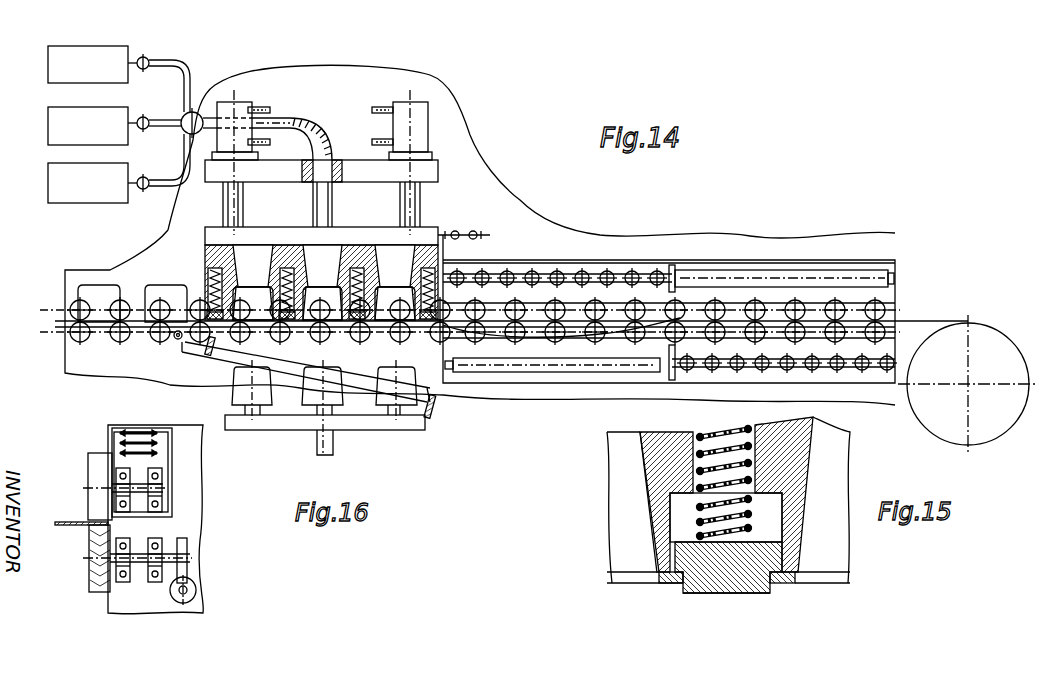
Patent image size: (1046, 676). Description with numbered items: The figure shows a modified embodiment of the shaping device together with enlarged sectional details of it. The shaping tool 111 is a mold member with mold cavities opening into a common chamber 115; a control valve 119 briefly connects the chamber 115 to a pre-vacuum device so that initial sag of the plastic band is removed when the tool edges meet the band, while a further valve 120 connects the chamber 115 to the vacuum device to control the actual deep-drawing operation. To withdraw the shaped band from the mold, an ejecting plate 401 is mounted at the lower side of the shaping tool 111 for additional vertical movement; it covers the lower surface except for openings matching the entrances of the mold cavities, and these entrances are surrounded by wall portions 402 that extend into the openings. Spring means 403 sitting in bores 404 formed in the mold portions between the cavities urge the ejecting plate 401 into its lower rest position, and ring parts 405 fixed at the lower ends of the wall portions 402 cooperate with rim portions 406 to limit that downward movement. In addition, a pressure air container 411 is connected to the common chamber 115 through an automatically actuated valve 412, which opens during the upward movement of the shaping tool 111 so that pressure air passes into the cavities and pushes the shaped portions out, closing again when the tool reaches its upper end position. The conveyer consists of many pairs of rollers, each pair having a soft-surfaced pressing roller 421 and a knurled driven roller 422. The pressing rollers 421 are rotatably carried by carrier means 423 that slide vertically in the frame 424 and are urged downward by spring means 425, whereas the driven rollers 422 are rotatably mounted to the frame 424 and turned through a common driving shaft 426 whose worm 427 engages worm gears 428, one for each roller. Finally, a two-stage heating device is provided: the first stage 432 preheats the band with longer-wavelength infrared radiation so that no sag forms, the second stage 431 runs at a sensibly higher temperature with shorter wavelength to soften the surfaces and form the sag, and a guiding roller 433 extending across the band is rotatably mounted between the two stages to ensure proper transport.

In FIG. 14, the shaping tool 111 is at (211, 263).
In FIG. 15, the shaping tool 111 is at (642, 479).
In FIG. 14, the chamber 115 is at (371, 234).
In FIG. 14, the control valve 119 is at (146, 61).
In FIG. 14, the valve 120 is at (146, 121).
In FIG. 14, the ejecting plate 401 is at (324, 303).
In FIG. 15, the ejecting plate 401 is at (725, 587).
In FIG. 15, the wall portions 402 is at (654, 540).
In FIG. 14, the spring means 403 is at (211, 300).
In FIG. 15, the spring means 403 is at (751, 446).
In FIG. 14, the bores 404 is at (211, 281).
In FIG. 15, the bores 404 is at (695, 434).
In FIG. 15, the ring parts 405 is at (668, 584).
In FIG. 15, the rim portions 406 is at (677, 548).
In FIG. 14, the pressure air container 411 is at (82, 208).
In FIG. 14, the automatically actuated valve 412 is at (146, 181).
In FIG. 14, the pressing roller 421 is at (128, 298).
In FIG. 16, the pressing roller 421 is at (88, 477).
In FIG. 14, the driven roller 422 is at (130, 340).
In FIG. 16, the driven roller 422 is at (88, 542).
In FIG. 16, the carrier means 423 is at (167, 475).
In FIG. 16, the frame 424 is at (155, 612).
In FIG. 16, the spring means 425 is at (163, 440).
In FIG. 16, the common driving shaft 426 is at (196, 587).
In FIG. 16, the worm 427 is at (187, 586).
In FIG. 16, the worm gears 428 is at (188, 551).
In FIG. 14, the second heating stage 431 is at (591, 270).
In FIG. 14, the first heating stage 432 is at (764, 270).
In FIG. 14, the guiding roller 433 is at (668, 348).